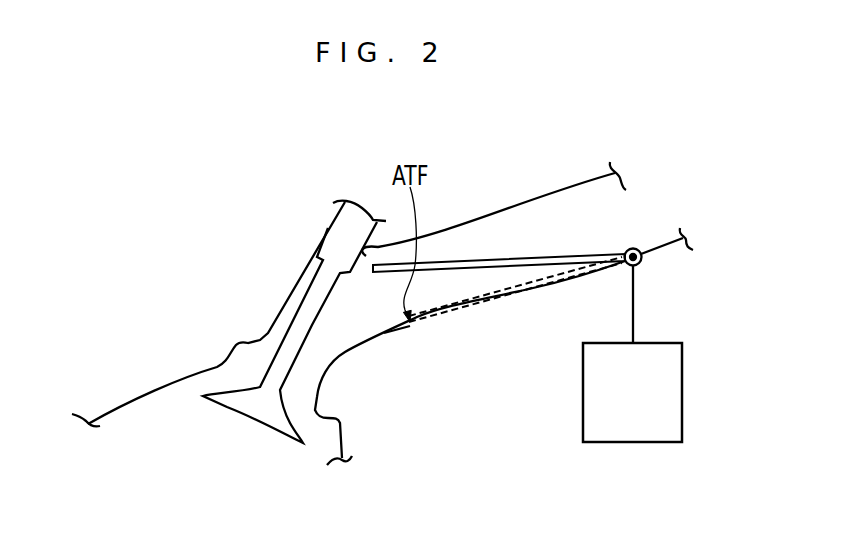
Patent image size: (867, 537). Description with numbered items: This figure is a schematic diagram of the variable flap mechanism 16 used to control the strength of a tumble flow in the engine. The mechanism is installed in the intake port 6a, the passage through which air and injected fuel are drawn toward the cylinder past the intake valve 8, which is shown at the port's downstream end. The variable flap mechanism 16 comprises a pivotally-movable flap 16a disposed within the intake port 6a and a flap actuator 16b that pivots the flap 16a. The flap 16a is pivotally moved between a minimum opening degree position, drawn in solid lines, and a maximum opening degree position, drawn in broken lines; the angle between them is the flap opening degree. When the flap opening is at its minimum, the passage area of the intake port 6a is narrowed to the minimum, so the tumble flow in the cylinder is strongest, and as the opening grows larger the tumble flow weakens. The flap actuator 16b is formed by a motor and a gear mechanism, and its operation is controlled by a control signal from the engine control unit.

The intake port 6a is at (487, 220).
The intake valve 8 is at (213, 400).
The variable flap mechanism 16 is at (527, 355).
The flap 16a is at (517, 258).
The flap actuator 16b is at (629, 442).